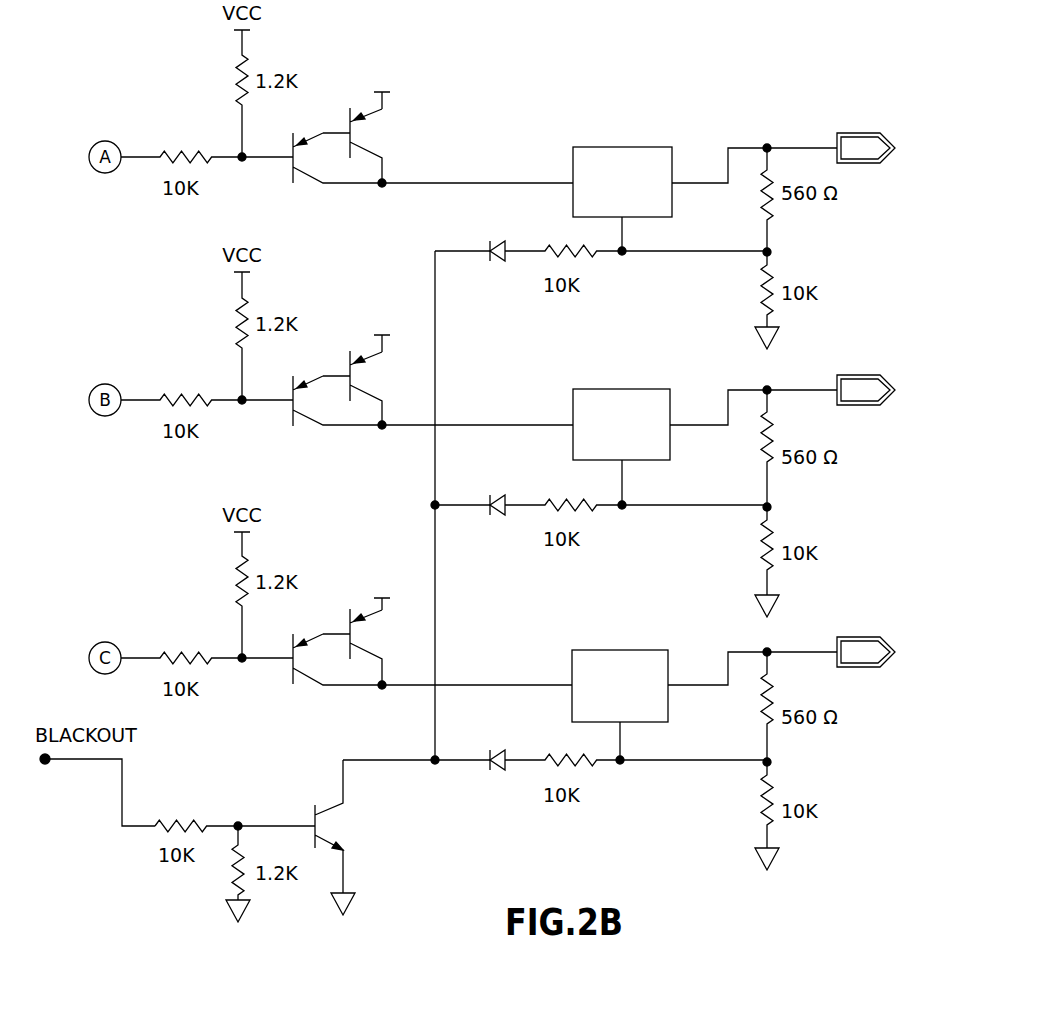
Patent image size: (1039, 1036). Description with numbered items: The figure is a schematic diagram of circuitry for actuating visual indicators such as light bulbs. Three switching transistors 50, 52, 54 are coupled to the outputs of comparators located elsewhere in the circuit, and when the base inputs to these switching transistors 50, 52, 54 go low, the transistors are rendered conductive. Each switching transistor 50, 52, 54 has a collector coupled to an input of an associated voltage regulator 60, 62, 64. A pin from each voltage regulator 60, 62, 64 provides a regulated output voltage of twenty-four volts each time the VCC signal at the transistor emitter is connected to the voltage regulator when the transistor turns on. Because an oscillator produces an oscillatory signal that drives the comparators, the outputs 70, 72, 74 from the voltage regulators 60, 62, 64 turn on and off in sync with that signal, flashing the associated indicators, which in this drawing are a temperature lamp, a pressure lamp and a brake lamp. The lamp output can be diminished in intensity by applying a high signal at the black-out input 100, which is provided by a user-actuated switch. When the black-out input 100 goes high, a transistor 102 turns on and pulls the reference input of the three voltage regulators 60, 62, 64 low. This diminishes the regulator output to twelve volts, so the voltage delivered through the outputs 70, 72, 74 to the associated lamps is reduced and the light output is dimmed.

The switching transistor 50 is at (372, 130).
The switching transistor 52 is at (392, 373).
The switching transistor 54 is at (392, 628).
The voltage regulator 60 is at (614, 157).
The voltage regulator 62 is at (612, 398).
The voltage regulator 64 is at (610, 658).
The output 70 is at (805, 147).
The output 72 is at (810, 392).
The output 74 is at (800, 650).
The black-out input 100 is at (73, 760).
The transistor 102 is at (335, 831).